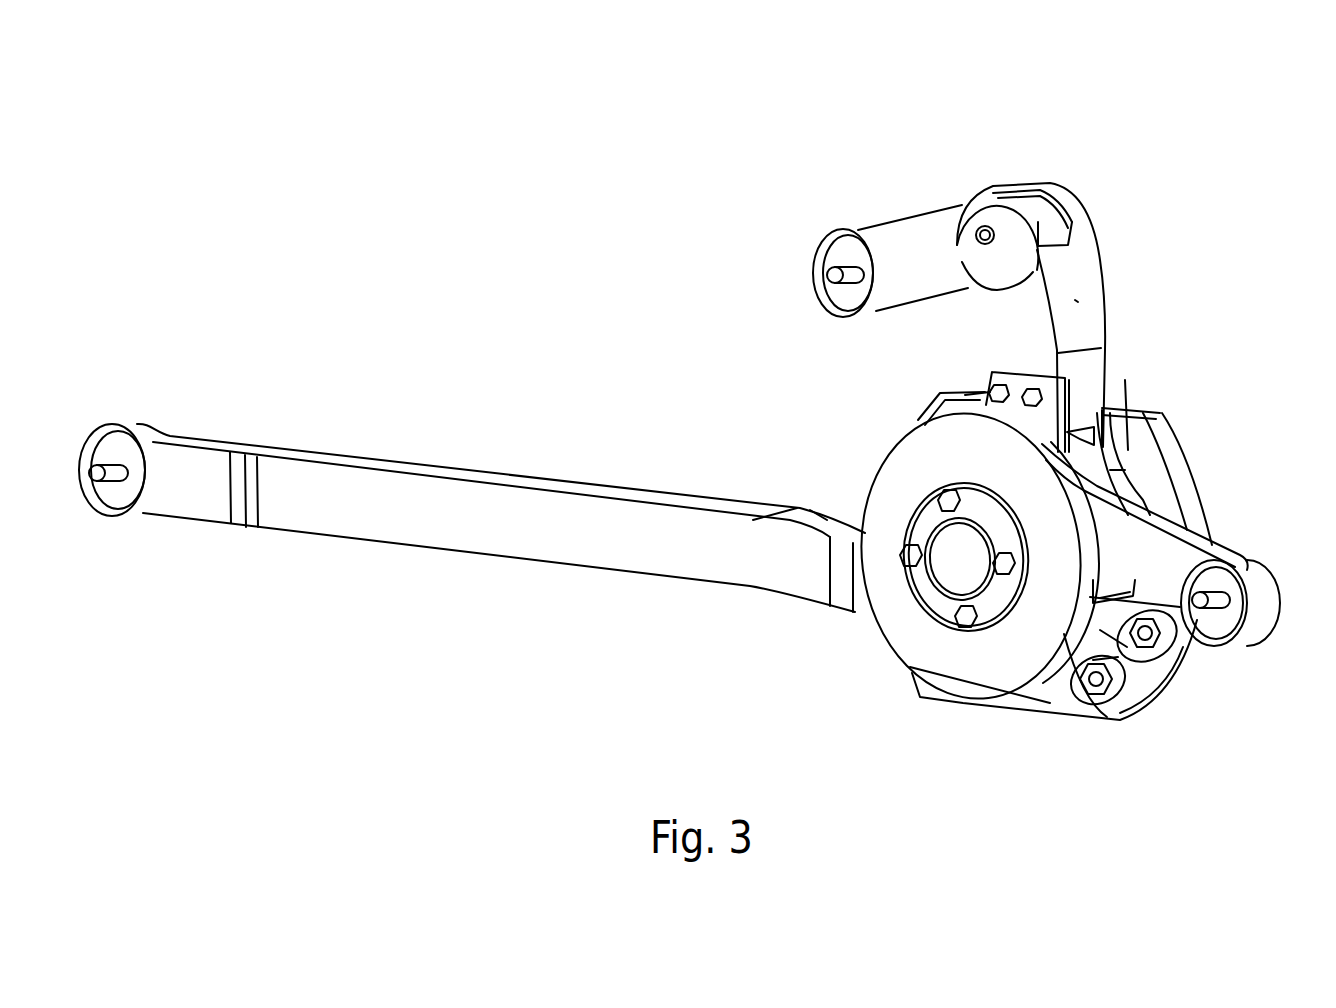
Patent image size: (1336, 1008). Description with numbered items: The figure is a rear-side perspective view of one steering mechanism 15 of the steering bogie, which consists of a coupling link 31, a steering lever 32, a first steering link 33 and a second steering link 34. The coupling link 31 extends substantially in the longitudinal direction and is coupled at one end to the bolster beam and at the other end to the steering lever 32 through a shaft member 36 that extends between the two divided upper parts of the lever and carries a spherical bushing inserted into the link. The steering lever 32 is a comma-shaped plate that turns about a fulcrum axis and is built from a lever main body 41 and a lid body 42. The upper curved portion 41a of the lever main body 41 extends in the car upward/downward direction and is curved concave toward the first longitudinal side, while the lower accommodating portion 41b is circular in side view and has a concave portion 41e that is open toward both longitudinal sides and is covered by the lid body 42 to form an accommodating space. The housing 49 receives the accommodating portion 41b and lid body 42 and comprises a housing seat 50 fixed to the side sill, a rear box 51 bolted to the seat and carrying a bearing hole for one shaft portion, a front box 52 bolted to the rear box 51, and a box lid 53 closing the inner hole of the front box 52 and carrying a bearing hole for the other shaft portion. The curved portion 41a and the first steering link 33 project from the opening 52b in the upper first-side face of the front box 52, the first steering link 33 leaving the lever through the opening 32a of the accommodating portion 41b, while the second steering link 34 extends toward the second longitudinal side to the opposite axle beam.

The steering mechanism 15 is at (1192, 160).
The coupling link 31 is at (915, 230).
The steering lever 32 is at (1192, 412).
The opening 32a is at (1090, 470).
The first steering link 33 is at (1175, 558).
The second steering link 34 is at (528, 497).
The shaft member 36 is at (978, 228).
The lever main body 41 is at (1101, 248).
The curved portion 41a is at (1087, 297).
The accommodating portion 41b is at (1093, 485).
The concave portion 41e is at (1105, 420).
The lid body 42 is at (977, 393).
The housing 49 is at (917, 400).
The housing seat 50 is at (1167, 433).
The rear box 51 is at (1115, 445).
The front box 52 is at (949, 576).
The opening 52b is at (1047, 377).
The box lid 53 is at (927, 505).